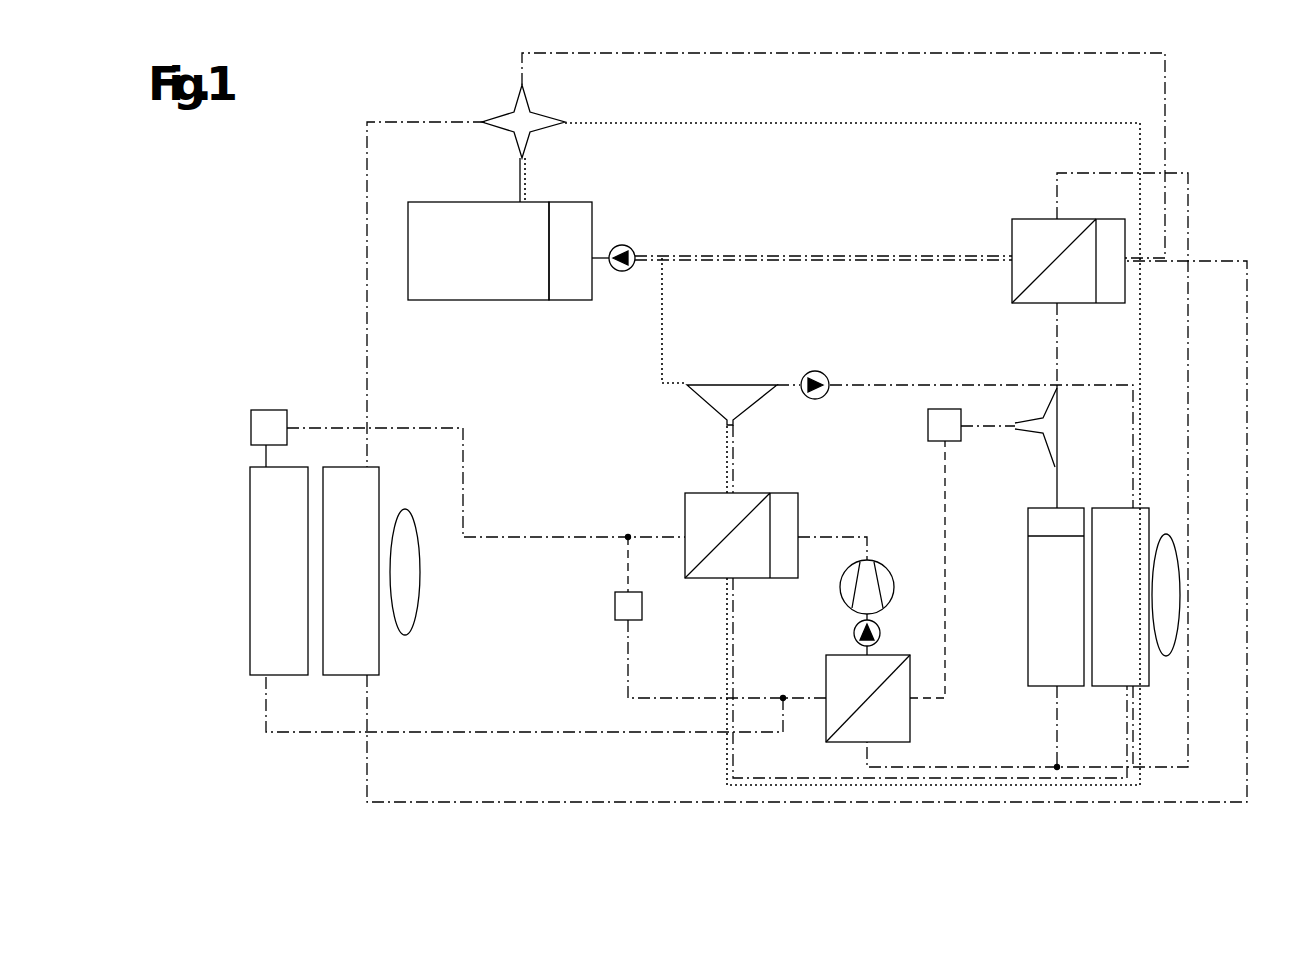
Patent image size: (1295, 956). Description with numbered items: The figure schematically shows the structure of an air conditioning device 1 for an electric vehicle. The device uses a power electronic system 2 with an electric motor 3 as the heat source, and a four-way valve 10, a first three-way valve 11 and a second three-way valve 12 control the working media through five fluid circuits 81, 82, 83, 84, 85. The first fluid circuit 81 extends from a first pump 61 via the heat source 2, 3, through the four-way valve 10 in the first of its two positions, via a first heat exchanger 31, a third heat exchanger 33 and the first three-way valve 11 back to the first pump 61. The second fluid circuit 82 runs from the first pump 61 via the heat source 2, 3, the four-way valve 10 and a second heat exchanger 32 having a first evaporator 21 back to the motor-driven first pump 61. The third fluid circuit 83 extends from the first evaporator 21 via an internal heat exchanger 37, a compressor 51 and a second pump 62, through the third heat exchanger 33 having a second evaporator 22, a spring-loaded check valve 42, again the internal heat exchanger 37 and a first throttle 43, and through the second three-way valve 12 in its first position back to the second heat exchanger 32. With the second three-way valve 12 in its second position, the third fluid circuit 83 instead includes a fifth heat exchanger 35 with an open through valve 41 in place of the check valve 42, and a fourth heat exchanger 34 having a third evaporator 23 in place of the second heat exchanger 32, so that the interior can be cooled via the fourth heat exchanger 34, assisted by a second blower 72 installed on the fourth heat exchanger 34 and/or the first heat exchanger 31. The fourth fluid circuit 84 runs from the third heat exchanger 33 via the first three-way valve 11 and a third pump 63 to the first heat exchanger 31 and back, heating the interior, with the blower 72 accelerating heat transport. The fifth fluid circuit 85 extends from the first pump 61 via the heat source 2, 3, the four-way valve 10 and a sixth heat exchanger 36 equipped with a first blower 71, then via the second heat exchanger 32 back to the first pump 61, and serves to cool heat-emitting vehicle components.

The air conditioning device 1 is at (312, 218).
The power electronic system 2 is at (570, 202).
The electric motor 3 is at (450, 202).
The four-way valve 10 is at (505, 118).
The first three-way valve 11 is at (727, 383).
The second three-way valve 12 is at (1032, 440).
The first evaporator 21 is at (1105, 303).
The second evaporator 22 is at (785, 493).
The third evaporator 23 is at (1028, 528).
The first heat exchanger 31 is at (1107, 508).
The second heat exchanger 32 is at (1020, 219).
The third heat exchanger 33 is at (697, 493).
The fourth heat exchanger 34 is at (1028, 668).
The fifth heat exchanger 35 is at (250, 620).
The sixth heat exchanger 36 is at (379, 655).
The internal heat exchanger 37 is at (826, 672).
The open through valve 41 is at (251, 420).
The spring-loaded check valve 42 is at (615, 605).
The first throttle 43 is at (928, 425).
The compressor 51 is at (885, 565).
The first pump 61 is at (633, 250).
The second pump 62 is at (853, 633).
The third pump 63 is at (826, 378).
The first blower 71 is at (417, 602).
The second blower 72 is at (1180, 630).
The first fluid circuit 81 is at (982, 122).
The second fluid circuit 82 is at (1167, 70).
The third fluid circuit 83 is at (1190, 190).
The fourth fluid circuit 84 is at (955, 383).
The fifth fluid circuit 85 is at (367, 780).